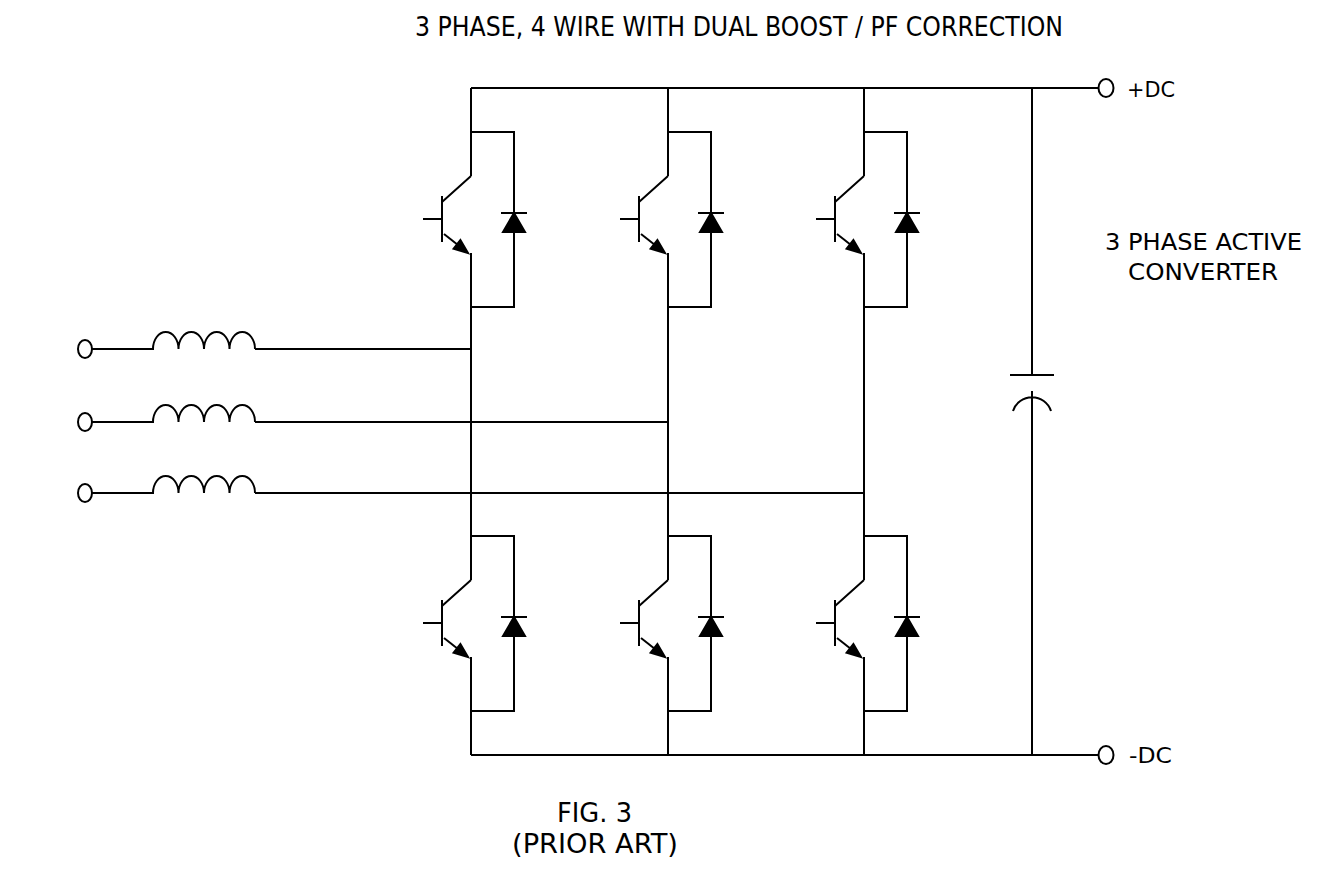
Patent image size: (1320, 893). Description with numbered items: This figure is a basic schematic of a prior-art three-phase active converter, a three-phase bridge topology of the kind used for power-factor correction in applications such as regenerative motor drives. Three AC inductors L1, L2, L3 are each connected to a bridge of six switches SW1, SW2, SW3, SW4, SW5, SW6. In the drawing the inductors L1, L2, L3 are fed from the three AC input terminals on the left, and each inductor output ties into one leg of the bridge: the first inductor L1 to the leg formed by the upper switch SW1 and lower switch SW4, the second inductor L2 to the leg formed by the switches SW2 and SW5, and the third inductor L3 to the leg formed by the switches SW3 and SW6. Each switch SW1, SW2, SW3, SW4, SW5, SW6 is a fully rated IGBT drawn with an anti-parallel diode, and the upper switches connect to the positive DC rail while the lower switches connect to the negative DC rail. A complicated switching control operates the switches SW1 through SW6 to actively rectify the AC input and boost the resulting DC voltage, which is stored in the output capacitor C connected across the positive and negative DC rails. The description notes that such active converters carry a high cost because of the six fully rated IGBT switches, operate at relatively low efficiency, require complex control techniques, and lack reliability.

The switch SW1 is at (469, 219).
The switch SW2 is at (666, 219).
The switch SW3 is at (863, 219).
The switch SW4 is at (469, 623).
The switch SW5 is at (666, 623).
The switch SW6 is at (863, 623).
The AC inductor L1 is at (166, 331).
The AC inductor L2 is at (166, 404).
The AC inductor L3 is at (166, 475).
The output capacitor C is at (1042, 421).